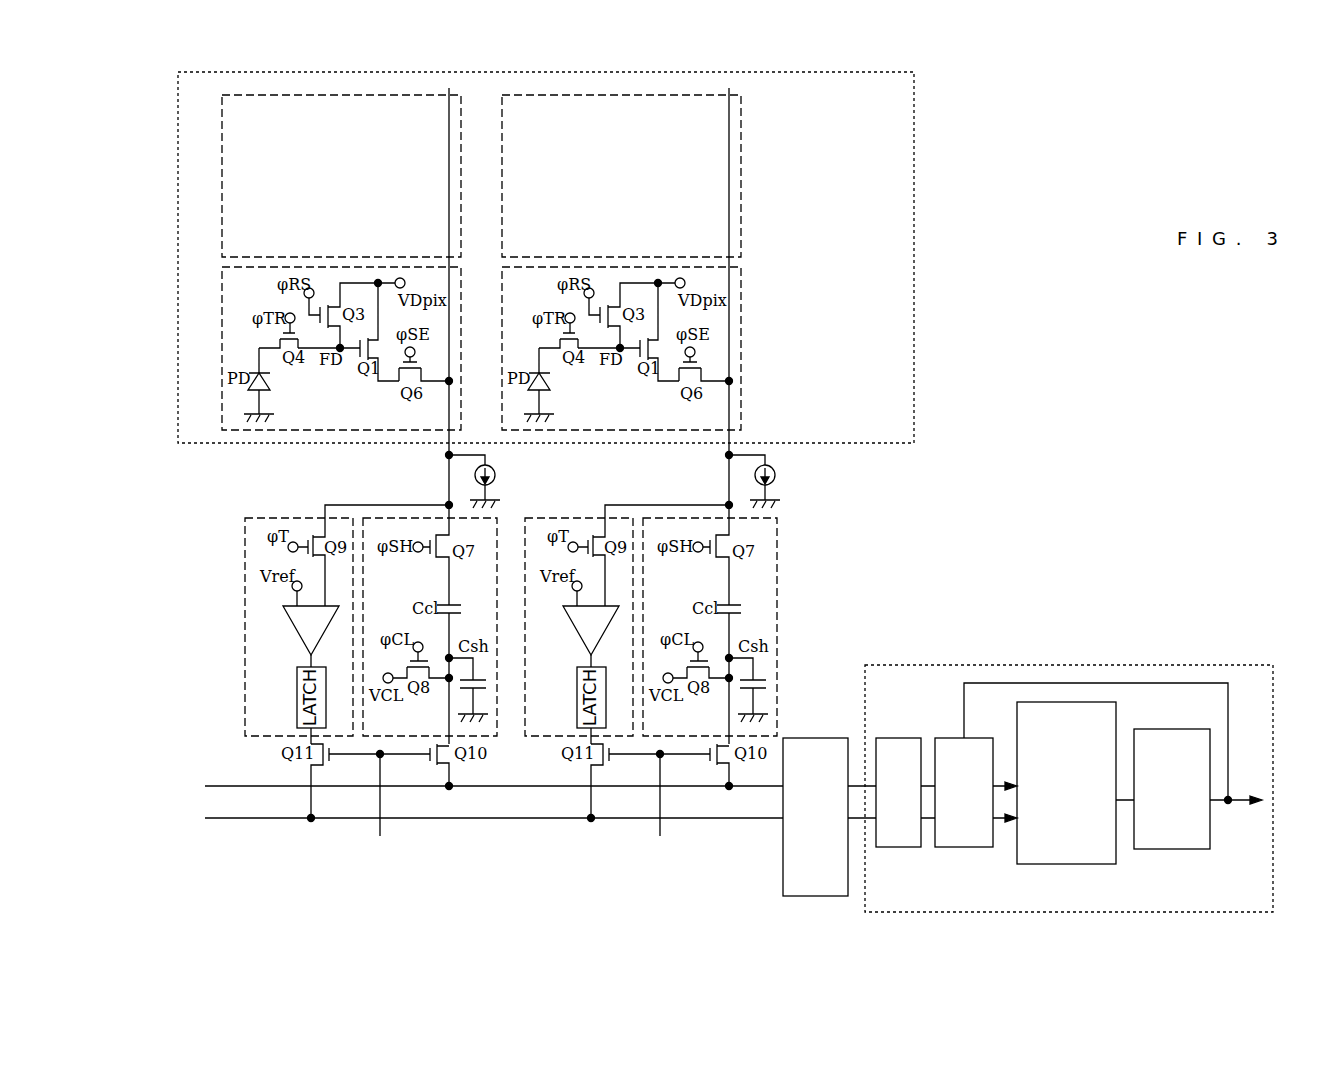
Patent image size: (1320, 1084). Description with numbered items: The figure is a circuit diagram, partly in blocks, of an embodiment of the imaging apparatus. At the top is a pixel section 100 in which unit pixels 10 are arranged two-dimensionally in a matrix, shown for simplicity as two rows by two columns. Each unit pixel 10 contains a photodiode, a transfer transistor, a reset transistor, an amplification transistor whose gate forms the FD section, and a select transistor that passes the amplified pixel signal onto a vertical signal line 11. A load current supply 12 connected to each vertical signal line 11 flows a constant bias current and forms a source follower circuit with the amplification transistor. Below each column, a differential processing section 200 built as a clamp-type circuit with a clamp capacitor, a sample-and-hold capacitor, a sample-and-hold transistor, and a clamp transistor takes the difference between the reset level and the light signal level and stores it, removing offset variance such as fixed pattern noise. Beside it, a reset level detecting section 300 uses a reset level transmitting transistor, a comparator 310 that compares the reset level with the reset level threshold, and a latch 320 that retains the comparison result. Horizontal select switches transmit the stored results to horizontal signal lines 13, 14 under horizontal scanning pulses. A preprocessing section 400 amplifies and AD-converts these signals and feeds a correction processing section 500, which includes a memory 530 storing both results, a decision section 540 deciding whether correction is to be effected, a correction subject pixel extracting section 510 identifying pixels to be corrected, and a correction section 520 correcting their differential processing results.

The pixel section 100 is at (914, 118).
The unit pixel 10 is at (739, 305).
The vertical signal line 11 is at (729, 403).
The load current supply 12 is at (730, 480).
The horizontal signal line 13 is at (225, 786).
The horizontal signal line 14 is at (225, 818).
The differential processing section 200 is at (777, 562).
The reset level detecting section 300 is at (535, 518).
The comparator 310 is at (293, 616).
The latch 320 is at (297, 682).
The preprocessing section 400 is at (783, 862).
The correction processing section 500 is at (925, 665).
The correction subject pixel extracting section 510 is at (1067, 864).
The correction section 520 is at (1172, 849).
The memory 530 is at (897, 847).
The decision section 540 is at (963, 847).